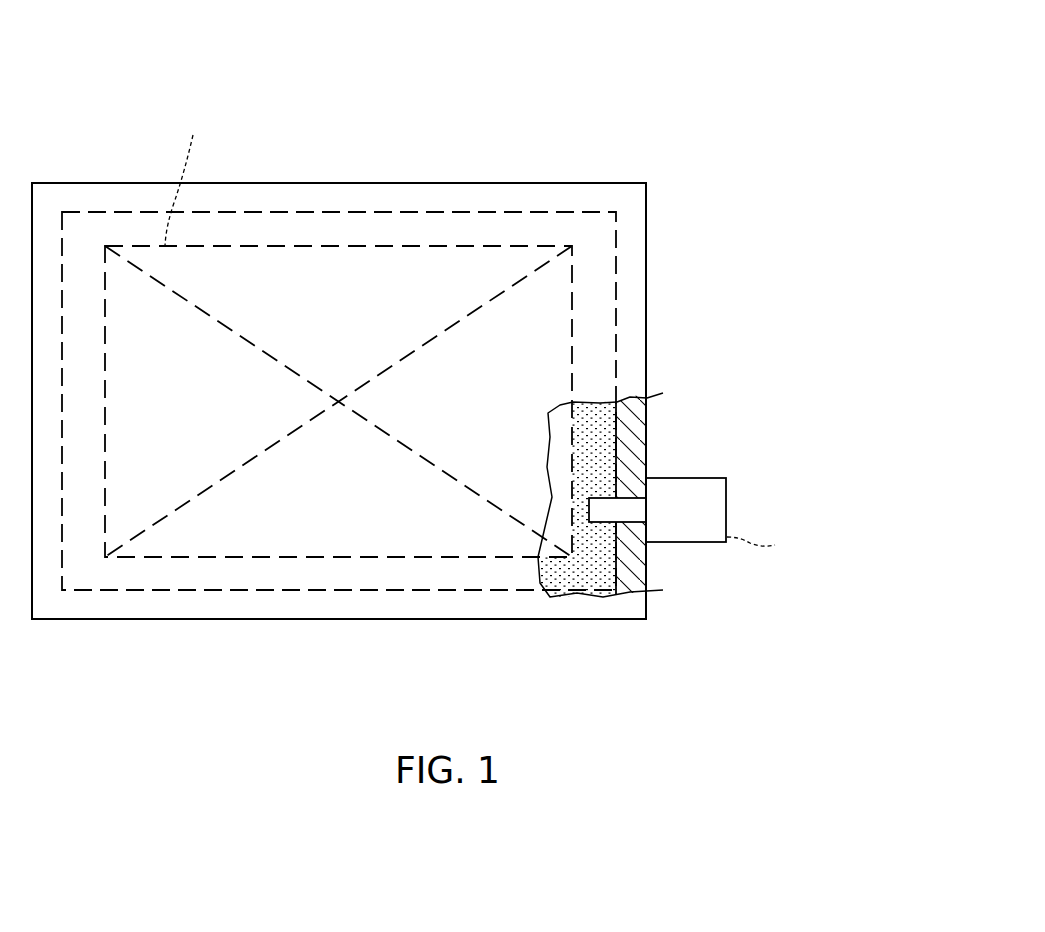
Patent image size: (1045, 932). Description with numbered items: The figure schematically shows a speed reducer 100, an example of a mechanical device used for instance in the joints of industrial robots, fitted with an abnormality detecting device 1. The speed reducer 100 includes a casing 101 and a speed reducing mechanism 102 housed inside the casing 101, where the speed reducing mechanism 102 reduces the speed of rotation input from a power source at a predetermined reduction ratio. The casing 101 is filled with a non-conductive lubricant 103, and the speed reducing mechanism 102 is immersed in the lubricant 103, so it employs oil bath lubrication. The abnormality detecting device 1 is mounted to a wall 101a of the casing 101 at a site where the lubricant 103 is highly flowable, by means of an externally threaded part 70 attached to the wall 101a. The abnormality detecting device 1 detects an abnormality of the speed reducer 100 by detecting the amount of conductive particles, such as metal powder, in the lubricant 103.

The speed reducer 100 is at (622, 51).
The casing 101 is at (396, 183).
The wall 101a is at (640, 433).
The speed reducing mechanism 102 is at (424, 246).
The lubricant 103 is at (590, 570).
The externally threaded part 70 is at (632, 525).
The abnormality detecting device 1 is at (738, 507).